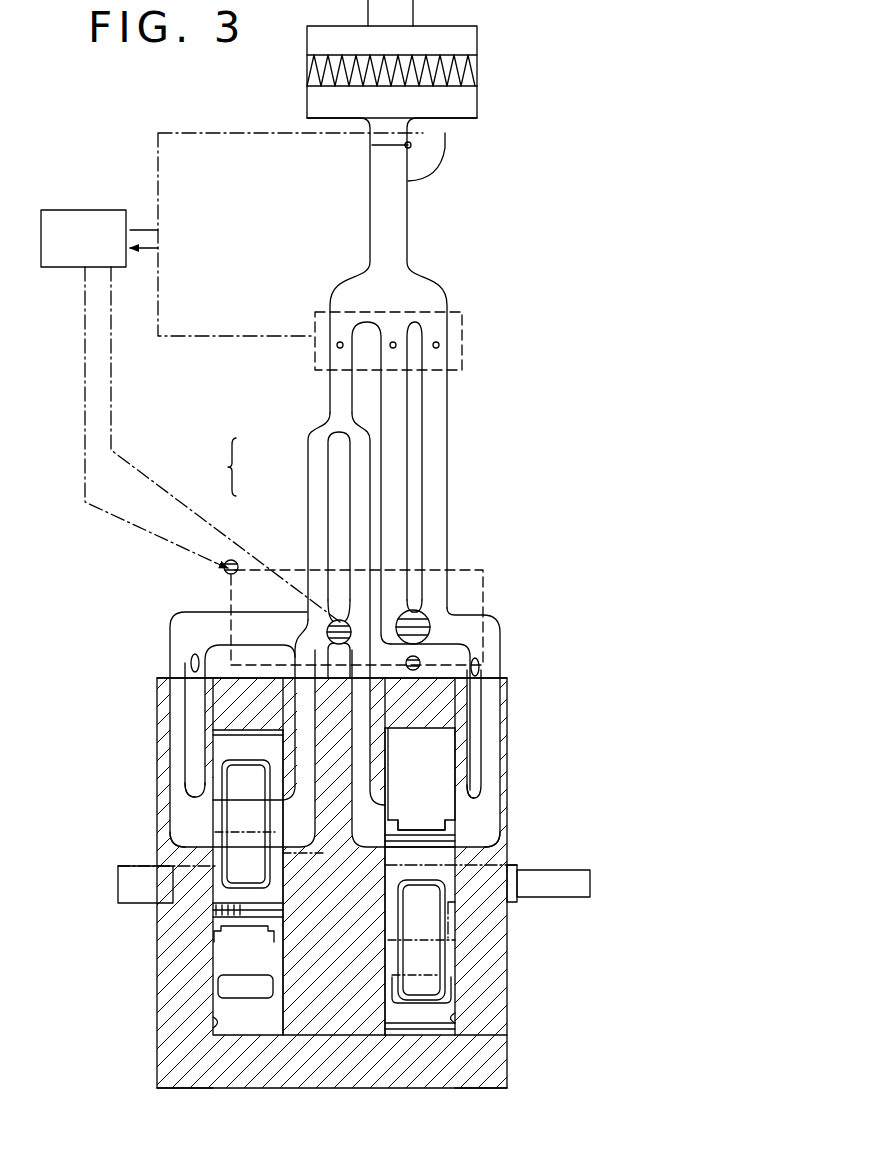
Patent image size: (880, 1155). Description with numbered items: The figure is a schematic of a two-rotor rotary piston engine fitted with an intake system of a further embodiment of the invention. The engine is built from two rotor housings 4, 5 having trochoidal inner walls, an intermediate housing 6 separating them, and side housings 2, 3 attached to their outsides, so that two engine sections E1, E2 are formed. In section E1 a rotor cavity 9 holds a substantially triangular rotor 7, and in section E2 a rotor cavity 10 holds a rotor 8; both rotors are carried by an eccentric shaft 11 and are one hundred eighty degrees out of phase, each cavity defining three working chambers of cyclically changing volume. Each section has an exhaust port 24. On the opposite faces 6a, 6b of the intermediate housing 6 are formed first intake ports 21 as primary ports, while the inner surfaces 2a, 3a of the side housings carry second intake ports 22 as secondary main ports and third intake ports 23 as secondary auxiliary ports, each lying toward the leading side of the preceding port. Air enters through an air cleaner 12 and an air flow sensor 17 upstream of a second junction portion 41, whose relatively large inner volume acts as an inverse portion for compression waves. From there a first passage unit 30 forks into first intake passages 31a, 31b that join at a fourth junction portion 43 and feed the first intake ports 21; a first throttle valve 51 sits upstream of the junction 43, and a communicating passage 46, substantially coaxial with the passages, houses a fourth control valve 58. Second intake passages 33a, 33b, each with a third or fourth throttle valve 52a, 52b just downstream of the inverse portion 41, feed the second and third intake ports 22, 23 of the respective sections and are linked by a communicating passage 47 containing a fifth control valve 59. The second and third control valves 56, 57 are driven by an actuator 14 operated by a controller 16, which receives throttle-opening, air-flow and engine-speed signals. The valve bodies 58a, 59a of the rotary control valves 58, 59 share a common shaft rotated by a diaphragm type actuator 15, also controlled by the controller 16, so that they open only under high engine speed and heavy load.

The side housing 2 is at (185, 1070).
The inner surface of side housing 2a is at (213, 1022).
The side housing 3 is at (487, 1070).
The inner surface of side housing 3a is at (455, 1015).
The rotor housing 4 is at (258, 1068).
The rotor housing 5 is at (415, 1070).
The intermediate housing 6 is at (338, 1065).
The face of intermediate housing 6a is at (280, 1070).
The face of intermediate housing 6b is at (385, 1070).
The rotor 7 is at (213, 908).
The rotor 8 is at (463, 822).
The rotor cavity 9 is at (237, 964).
The rotor cavity 10 is at (408, 764).
The eccentric shaft 11 is at (590, 882).
The air cleaner 12 is at (480, 101).
The actuator 14 is at (231, 558).
The diaphragm type actuator 15 is at (421, 655).
The controller 16 is at (73, 208).
The air flow sensor 17 is at (450, 151).
The first intake port 21 is at (302, 827).
The second intake port 22 is at (178, 838).
The third intake port 23 is at (190, 790).
The exhaust port 24 is at (218, 985).
The first passage unit 30 is at (214, 467).
The first intake passage 31a is at (317, 528).
The first intake passage 31b is at (352, 468).
The second intake passage 33a is at (384, 406).
The second intake passage 33b is at (445, 400).
The second junction portion 41 is at (410, 262).
The fourth junction portion 43 is at (327, 418).
The communicating passage 46 is at (298, 650).
The communicating passage 47 is at (452, 595).
The first throttle valve 51 is at (340, 342).
The third throttle valve 52a is at (393, 342).
The fourth throttle valve 52b is at (437, 342).
The second control valve 56 is at (191, 660).
The third control valve 57 is at (482, 665).
The fourth control valve 58 is at (328, 621).
The valve body 58a is at (327, 631).
The fifth control valve 59 is at (440, 597).
The valve body 59a is at (436, 613).
The engine section E1 is at (240, 1090).
The engine section E2 is at (435, 1092).